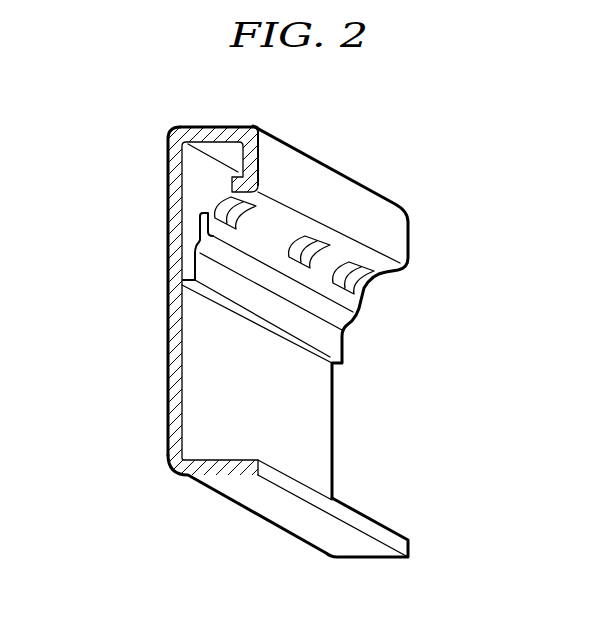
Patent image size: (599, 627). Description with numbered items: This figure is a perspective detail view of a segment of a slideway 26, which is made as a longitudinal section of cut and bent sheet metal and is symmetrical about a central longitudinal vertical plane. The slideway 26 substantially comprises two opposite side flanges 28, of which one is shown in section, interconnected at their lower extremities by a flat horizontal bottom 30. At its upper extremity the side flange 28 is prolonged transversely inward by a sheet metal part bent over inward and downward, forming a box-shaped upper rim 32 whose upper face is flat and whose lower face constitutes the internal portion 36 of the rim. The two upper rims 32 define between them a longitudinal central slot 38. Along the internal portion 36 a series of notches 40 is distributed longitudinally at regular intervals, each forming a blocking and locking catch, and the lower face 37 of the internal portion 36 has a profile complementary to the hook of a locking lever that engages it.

The slideway 26 is at (299, 342).
The side flange 28 is at (168, 297).
The flat horizontal bottom 30 is at (222, 474).
The upper rim 32 is at (204, 178).
The internal portion 36 is at (293, 311).
The lower face 37 is at (322, 265).
The longitudinal central slot 38 is at (355, 245).
The notches 40 is at (217, 203).